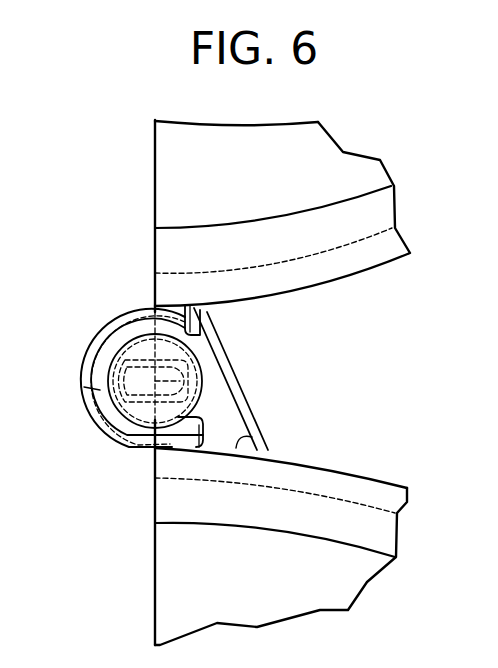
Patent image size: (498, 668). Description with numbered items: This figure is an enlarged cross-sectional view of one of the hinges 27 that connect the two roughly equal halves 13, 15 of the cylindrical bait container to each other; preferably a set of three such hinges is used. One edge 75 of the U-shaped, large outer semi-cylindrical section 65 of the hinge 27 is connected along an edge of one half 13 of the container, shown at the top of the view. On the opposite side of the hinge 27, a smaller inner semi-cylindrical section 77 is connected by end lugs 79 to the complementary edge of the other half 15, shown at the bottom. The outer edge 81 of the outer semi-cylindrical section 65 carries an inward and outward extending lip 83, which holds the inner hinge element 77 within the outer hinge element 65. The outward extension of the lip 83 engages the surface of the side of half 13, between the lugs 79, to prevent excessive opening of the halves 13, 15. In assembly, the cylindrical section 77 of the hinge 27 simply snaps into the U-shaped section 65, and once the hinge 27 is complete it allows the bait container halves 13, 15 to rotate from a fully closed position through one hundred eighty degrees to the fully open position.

The container half 13 is at (325, 294).
The container half 15 is at (360, 460).
The hinge 27 is at (80, 367).
The outer semi-cylindrical section 65 is at (118, 422).
The edge of outer semi-cylinder section 75 is at (203, 315).
The inner semi-cylindrical section 77 is at (203, 390).
The end lugs 79 is at (250, 434).
The outer edge 81 is at (141, 303).
The lip 83 is at (205, 378).